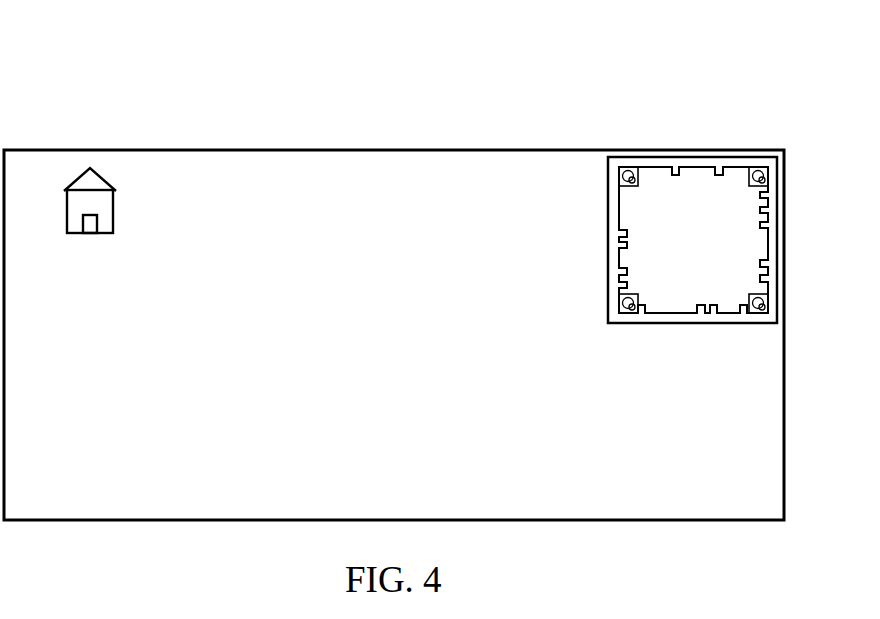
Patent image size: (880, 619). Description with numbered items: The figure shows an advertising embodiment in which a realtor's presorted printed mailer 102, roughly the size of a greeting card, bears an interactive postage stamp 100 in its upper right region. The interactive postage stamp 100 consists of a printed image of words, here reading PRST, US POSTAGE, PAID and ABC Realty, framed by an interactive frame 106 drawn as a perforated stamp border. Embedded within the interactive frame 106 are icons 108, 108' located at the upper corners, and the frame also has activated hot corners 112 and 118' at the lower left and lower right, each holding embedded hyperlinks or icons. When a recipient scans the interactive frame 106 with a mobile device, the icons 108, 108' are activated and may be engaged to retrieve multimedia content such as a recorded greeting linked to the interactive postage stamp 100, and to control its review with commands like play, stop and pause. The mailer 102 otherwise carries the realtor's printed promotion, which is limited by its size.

The interactive postage stamp 100 is at (649, 237).
The mail item 102 is at (226, 77).
The interactive frame 106 is at (671, 323).
The embedded icon 108 is at (570, 185).
The embedded icon 108' is at (773, 126).
The activated (hot) corner 112 is at (625, 305).
The activated (hot) corner 118' is at (743, 351).